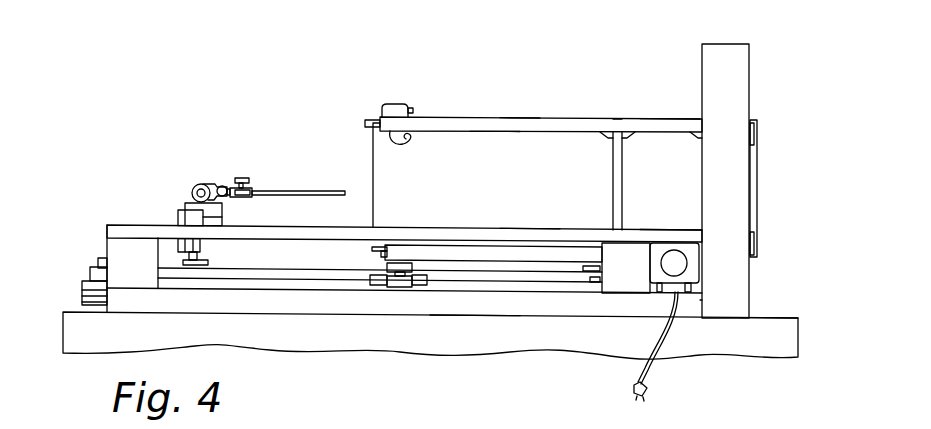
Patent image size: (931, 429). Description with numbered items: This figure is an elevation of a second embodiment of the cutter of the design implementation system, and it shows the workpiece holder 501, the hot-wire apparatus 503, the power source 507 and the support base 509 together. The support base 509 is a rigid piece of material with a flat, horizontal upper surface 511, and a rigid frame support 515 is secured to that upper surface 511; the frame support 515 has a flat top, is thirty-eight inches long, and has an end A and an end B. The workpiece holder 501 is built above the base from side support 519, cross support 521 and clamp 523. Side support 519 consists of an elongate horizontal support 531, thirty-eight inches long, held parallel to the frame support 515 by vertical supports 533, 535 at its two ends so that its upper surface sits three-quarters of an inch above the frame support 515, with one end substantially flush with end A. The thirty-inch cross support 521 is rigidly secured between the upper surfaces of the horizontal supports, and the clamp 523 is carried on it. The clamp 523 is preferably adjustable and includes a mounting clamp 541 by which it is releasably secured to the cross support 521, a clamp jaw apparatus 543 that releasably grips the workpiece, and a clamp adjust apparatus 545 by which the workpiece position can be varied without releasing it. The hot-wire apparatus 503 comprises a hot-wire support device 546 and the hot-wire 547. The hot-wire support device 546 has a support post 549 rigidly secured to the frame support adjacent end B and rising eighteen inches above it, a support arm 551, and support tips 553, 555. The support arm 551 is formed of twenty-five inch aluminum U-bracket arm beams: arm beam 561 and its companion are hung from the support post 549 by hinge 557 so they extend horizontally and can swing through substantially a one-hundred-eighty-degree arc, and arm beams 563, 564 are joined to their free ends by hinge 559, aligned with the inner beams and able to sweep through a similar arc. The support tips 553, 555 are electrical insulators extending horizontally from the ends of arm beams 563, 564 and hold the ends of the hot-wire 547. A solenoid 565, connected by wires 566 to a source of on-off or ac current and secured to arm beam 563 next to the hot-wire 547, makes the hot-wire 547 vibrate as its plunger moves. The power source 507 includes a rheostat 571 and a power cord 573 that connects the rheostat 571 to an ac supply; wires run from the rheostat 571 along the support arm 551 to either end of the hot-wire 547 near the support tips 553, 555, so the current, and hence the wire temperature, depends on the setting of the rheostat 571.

The workpiece holder 501 is at (186, 161).
The hot-wire apparatus 503 is at (515, 113).
The power source 507 is at (663, 228).
The support base 509 is at (802, 340).
The upper surface 511 is at (762, 317).
The frame support 515 is at (478, 302).
The side support 519 is at (465, 224).
The cross support 521 is at (223, 218).
The clamp 523 is at (261, 164).
The horizontal support 531 is at (521, 231).
The vertical support 533 is at (107, 245).
The vertical support 535 is at (627, 280).
The mounting clamp 541 is at (206, 253).
The clamp jaw apparatus 543 is at (297, 191).
The clamp adjust apparatus 545 is at (222, 186).
The hot-wire support device 546 is at (613, 115).
The hot-wire 547 is at (372, 123).
The support post 549 is at (750, 58).
The support arm 551 is at (469, 113).
The support tip 553 is at (365, 123).
The support tip 555 is at (372, 252).
The hinge 557 is at (757, 166).
The hinge 559 is at (623, 160).
The arm beam 561 is at (665, 118).
The arm beam 563 is at (490, 132).
The arm beam 564 is at (418, 247).
The solenoid 565 is at (396, 104).
The wires 566 is at (393, 134).
The rheostat 571 is at (700, 262).
The power cord 573 is at (630, 390).
The end A is at (100, 308).
The end B is at (703, 305).